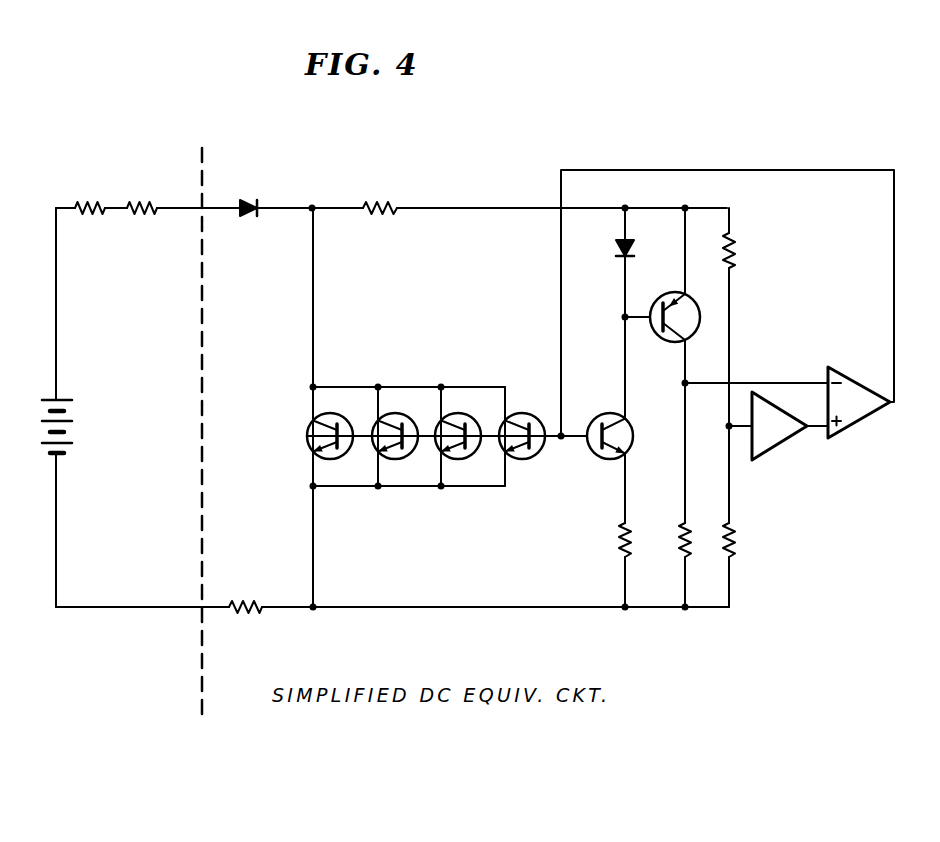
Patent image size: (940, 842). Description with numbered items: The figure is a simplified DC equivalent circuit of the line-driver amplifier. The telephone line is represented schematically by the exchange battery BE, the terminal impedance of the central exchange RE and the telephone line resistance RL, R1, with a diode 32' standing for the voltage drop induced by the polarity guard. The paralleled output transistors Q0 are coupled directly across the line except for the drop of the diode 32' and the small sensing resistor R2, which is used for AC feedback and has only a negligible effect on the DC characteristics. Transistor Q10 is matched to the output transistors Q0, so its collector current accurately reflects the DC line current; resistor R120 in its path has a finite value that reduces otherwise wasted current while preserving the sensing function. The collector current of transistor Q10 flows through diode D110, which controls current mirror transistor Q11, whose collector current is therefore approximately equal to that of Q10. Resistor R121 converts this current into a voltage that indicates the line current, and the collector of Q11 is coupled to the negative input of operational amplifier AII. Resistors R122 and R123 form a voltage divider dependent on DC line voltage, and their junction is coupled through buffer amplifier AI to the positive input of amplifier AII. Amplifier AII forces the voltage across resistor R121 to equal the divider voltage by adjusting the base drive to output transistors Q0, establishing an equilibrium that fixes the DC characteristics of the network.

The terminal impedance of the central exchange RE is at (98, 180).
The telephone line resistance RL is at (153, 180).
The diode 32' is at (244, 187).
The telephone line resistance R1 is at (391, 199).
The sensing resistor R2 is at (256, 618).
The exchange battery BE is at (75, 430).
The paralleled output transistors Q0 is at (447, 490).
The transistor Q10 is at (629, 432).
The current mirror transistor Q11 is at (668, 340).
The diode D110 is at (620, 258).
The resistor R120 is at (616, 535).
The resistor R121 is at (675, 545).
The resistor R122 is at (735, 257).
The resistor R123 is at (740, 537).
The buffer amplifier AI is at (781, 421).
The operational amplifier AII is at (862, 395).